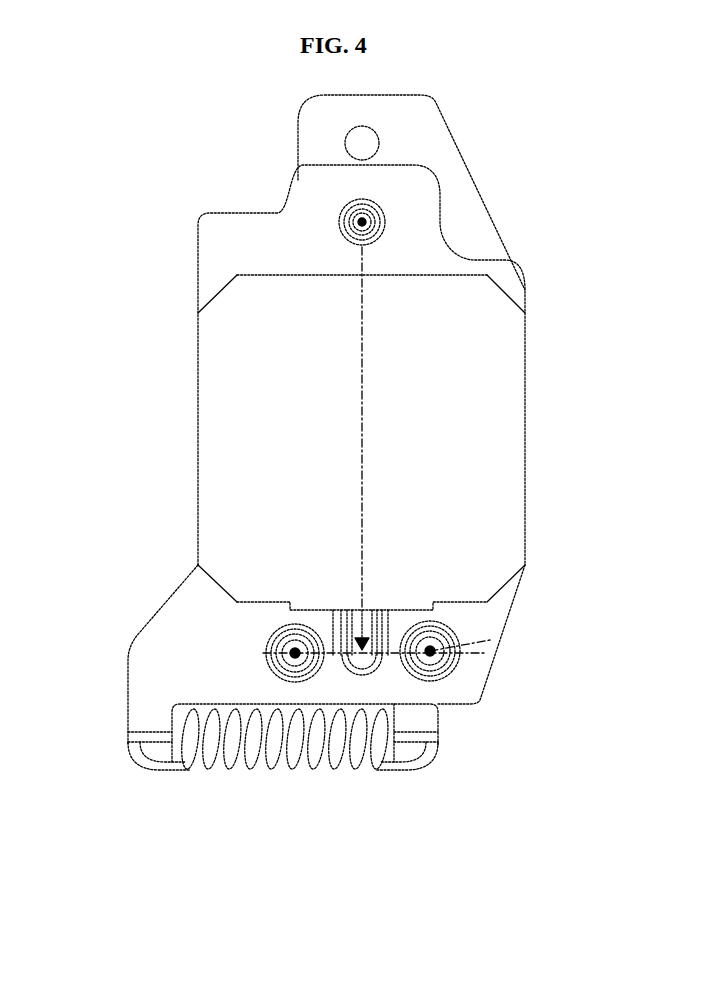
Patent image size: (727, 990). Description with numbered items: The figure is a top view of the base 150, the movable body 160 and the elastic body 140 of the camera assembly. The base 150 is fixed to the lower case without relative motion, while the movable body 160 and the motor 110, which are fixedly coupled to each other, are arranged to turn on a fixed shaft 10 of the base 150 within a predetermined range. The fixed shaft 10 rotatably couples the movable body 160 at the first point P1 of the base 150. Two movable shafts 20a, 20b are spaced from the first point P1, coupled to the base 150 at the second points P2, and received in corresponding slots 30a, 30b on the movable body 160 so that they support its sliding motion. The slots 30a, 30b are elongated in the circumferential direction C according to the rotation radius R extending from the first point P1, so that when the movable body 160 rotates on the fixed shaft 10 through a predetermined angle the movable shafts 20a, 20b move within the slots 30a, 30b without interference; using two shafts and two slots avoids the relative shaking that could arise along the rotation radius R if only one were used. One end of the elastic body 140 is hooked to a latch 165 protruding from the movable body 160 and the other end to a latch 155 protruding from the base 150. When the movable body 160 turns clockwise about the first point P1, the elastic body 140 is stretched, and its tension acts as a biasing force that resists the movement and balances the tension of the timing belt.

The fixed shaft 10 is at (350, 220).
The first point P1 is at (368, 218).
The base 150 is at (486, 196).
The motor 110 is at (505, 357).
The rotation radius R is at (372, 427).
The movable shaft 20a is at (268, 640).
The movable shaft 20b is at (450, 632).
The slot 30a is at (288, 668).
The slot 30b is at (458, 664).
The circumferential direction C is at (295, 653).
The second point P2 is at (286, 668).
The movable body 160 is at (510, 600).
The latch 165 is at (142, 723).
The latch 155 is at (422, 723).
The elastic body 140 is at (297, 773).